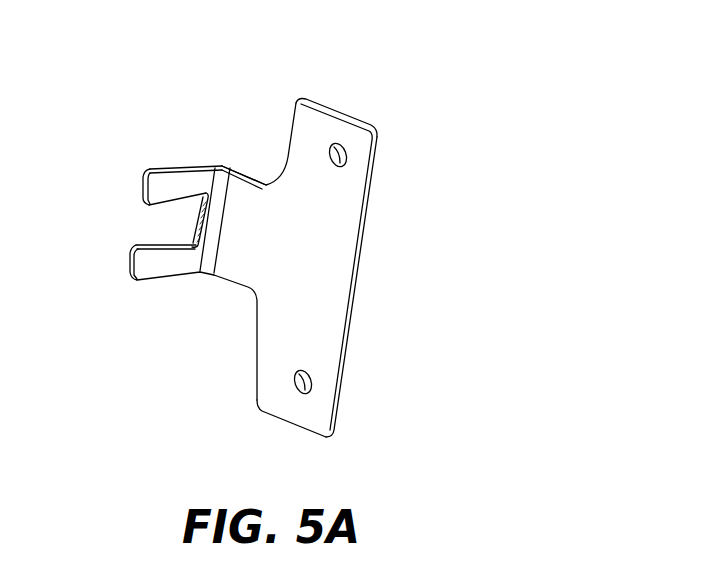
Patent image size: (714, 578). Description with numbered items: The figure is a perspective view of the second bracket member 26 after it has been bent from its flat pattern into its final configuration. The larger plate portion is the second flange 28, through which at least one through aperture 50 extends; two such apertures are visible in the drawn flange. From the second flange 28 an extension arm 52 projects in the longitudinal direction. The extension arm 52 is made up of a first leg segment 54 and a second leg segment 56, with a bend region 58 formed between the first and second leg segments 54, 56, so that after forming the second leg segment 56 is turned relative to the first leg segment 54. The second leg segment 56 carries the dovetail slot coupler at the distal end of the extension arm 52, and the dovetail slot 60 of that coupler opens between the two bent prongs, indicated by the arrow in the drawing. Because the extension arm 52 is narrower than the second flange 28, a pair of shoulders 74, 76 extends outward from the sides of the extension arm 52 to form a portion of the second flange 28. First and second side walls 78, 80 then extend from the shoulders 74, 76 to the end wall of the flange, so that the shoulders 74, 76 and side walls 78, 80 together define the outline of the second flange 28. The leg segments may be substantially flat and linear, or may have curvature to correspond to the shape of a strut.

The second bracket member 26 is at (135, 408).
The second flange 28 is at (313, 266).
The through aperture 50 is at (337, 163).
The extension arm 52 is at (163, 185).
The first leg segment 54 is at (252, 175).
The second leg segment 56 is at (155, 268).
The bend region 58 is at (222, 163).
The dovetail slot 60 is at (137, 225).
The shoulder 74 is at (253, 362).
The shoulder 76 is at (296, 122).
The first side wall 78 is at (285, 426).
The second side wall 80 is at (338, 102).